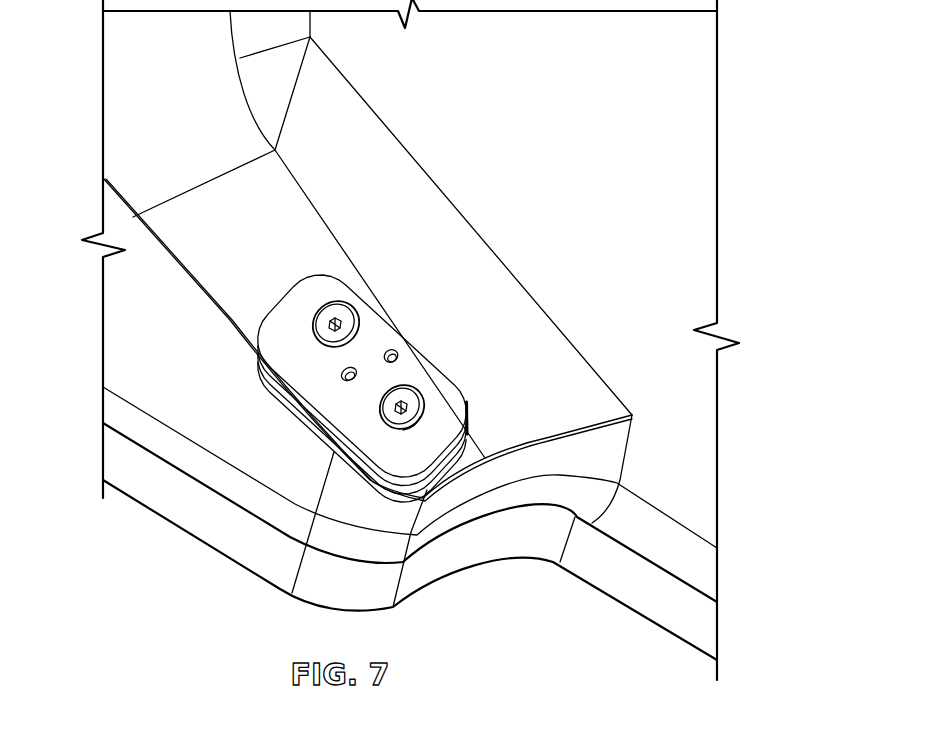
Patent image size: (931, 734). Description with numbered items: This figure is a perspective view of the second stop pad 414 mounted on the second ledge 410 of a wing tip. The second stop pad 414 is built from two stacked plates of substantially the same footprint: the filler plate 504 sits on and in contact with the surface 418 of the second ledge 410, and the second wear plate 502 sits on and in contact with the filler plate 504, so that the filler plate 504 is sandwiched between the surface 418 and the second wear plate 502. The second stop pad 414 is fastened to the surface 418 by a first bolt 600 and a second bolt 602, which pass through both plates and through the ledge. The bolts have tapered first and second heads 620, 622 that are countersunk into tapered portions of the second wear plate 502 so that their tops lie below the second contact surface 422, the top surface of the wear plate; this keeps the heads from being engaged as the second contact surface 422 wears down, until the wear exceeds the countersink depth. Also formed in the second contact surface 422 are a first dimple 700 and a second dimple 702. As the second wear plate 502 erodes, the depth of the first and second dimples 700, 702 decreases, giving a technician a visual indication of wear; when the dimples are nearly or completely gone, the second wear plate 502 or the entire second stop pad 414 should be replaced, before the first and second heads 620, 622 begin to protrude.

The second ledge 410 is at (121, 329).
The second stop pad 414 is at (399, 286).
The surface 418 is at (455, 462).
The second contact surface 422 is at (420, 378).
The second wear plate 502 is at (276, 321).
The filler plate 504 is at (267, 340).
The first bolt 600 is at (324, 317).
The second bolt 602 is at (413, 392).
The first head 620 is at (345, 312).
The second head 622 is at (408, 424).
The first dimple 700 is at (343, 376).
The second dimple 702 is at (394, 348).